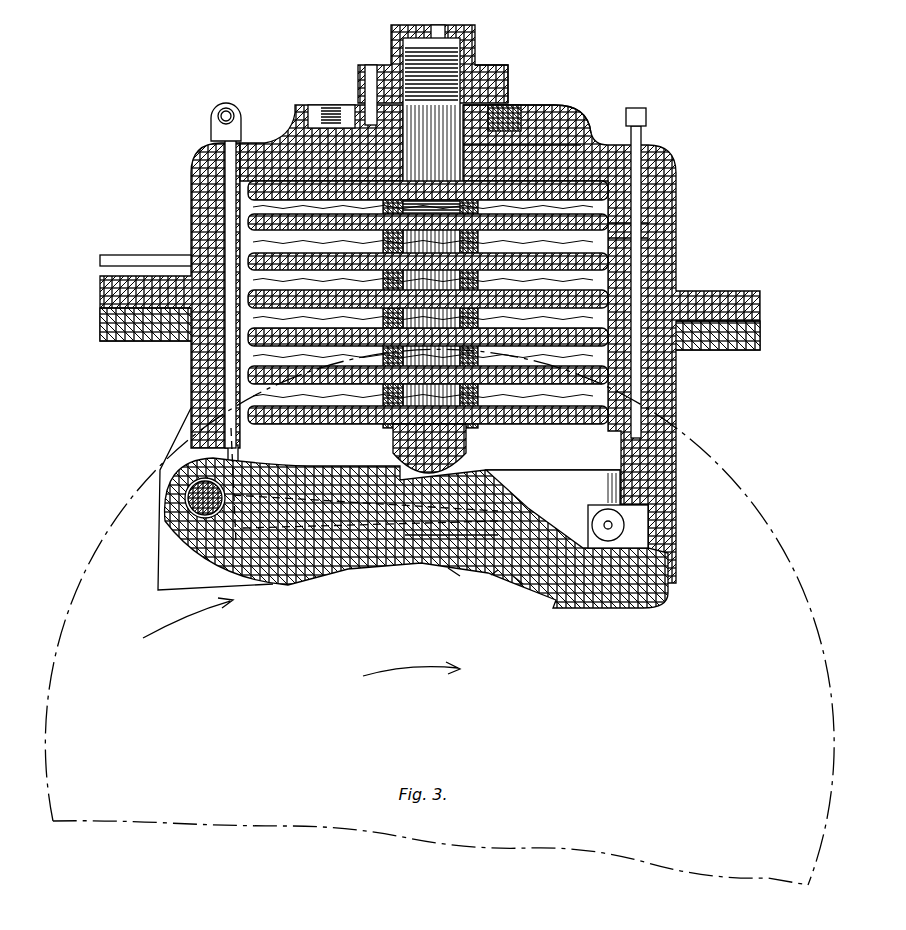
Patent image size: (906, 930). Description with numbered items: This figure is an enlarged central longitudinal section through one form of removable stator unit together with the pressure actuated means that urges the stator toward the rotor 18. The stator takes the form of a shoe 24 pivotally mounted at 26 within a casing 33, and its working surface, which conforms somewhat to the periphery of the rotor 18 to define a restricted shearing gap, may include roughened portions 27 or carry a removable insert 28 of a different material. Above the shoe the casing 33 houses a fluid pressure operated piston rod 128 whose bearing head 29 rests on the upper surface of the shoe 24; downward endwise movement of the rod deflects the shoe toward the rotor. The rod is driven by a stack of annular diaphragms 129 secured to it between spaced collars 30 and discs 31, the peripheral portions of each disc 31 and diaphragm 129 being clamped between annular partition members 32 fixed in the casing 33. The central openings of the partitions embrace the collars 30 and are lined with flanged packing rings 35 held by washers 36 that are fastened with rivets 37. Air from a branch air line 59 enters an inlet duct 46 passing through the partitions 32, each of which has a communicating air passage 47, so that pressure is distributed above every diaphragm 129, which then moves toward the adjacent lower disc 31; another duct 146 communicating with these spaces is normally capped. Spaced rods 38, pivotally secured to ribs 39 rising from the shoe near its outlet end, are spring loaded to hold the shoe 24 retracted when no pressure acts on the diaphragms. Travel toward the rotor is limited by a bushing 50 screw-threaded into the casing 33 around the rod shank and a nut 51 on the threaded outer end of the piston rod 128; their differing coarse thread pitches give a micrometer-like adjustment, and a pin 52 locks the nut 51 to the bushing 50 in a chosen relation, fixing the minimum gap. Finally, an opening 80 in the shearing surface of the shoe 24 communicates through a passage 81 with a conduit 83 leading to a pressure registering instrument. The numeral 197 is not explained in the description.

The rotor 18 is at (693, 677).
The shoe 24 is at (322, 553).
The pivot 26 is at (183, 488).
The roughened portions 27 is at (457, 560).
The insert 28 is at (418, 555).
The bearing head 29 is at (380, 450).
The collars 30 is at (393, 242).
The discs 31 is at (393, 213).
The annular partition members 32 is at (253, 172).
The casing 33 is at (573, 140).
The flanged packing rings 35 is at (518, 112).
The washers 36 is at (350, 172).
The rivets 37 is at (393, 308).
The spaced rods 38 is at (603, 463).
The ribs 39 is at (627, 527).
The inlet duct 46 is at (217, 152).
The air passage 47 is at (223, 183).
The bushing 50 is at (508, 112).
The nut 51 is at (388, 23).
The pin 52 is at (357, 78).
The branch air line 59 is at (203, 110).
The opening 80 is at (483, 567).
The passage 81 is at (227, 418).
The conduit 83 is at (112, 250).
The piston rod 128 is at (478, 92).
The annular diaphragms 129 is at (237, 373).
The duct 146 is at (657, 230).
The tie bolt 197 is at (631, 118).